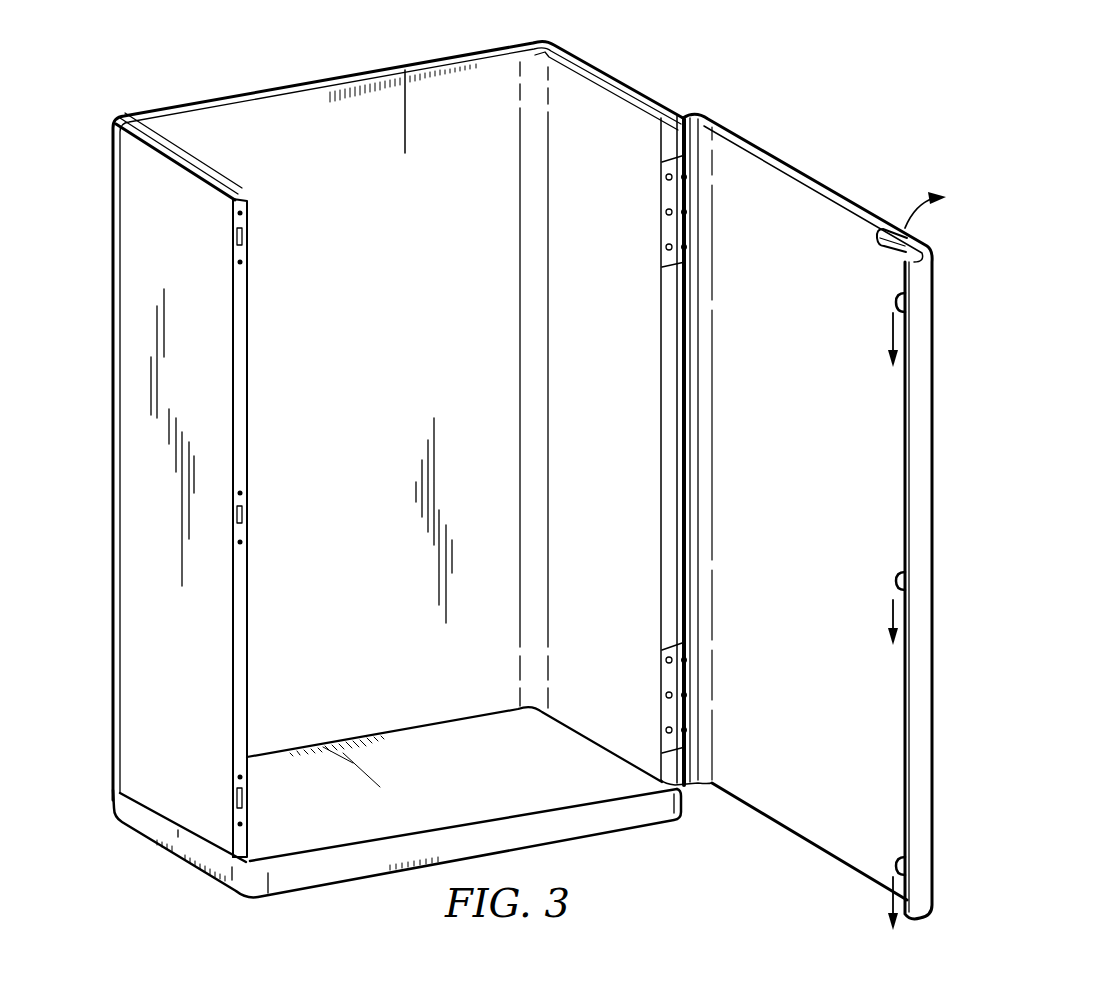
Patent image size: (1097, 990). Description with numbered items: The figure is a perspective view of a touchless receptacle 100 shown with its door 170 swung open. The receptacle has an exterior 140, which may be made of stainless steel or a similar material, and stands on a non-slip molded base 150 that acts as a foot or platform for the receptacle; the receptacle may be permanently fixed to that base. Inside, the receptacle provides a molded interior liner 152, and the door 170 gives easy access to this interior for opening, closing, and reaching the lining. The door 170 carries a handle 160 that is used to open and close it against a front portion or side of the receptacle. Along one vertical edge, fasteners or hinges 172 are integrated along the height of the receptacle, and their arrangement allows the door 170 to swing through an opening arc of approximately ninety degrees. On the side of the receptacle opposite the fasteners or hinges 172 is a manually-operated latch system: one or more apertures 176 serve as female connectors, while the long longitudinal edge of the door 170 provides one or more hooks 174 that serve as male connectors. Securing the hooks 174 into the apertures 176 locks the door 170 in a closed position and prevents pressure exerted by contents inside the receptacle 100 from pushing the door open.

The touchless receptacle 100 is at (500, 478).
The exterior 140 is at (148, 688).
The non-slip molded base 150 is at (555, 833).
The molded interior liner 152 is at (434, 385).
The handle 160 is at (876, 247).
The door 170 is at (905, 735).
The fasteners or hinges 172 is at (660, 173).
The hooks 174 is at (898, 578).
The apertures 176 is at (248, 240).